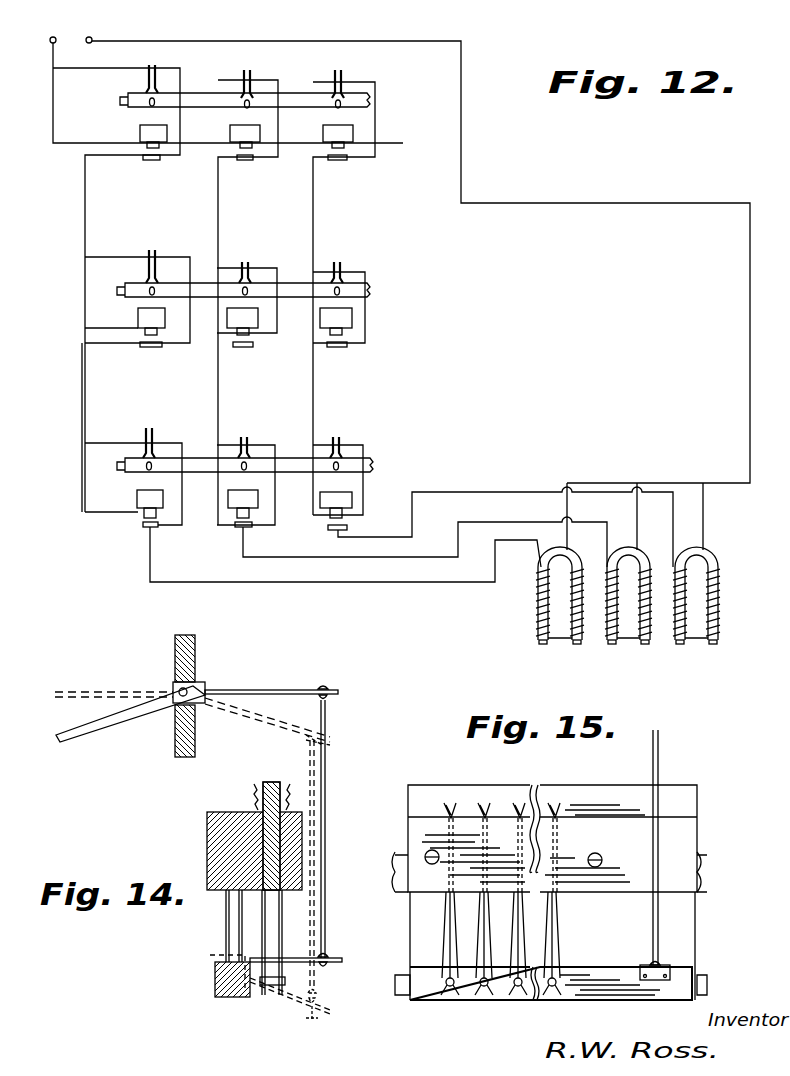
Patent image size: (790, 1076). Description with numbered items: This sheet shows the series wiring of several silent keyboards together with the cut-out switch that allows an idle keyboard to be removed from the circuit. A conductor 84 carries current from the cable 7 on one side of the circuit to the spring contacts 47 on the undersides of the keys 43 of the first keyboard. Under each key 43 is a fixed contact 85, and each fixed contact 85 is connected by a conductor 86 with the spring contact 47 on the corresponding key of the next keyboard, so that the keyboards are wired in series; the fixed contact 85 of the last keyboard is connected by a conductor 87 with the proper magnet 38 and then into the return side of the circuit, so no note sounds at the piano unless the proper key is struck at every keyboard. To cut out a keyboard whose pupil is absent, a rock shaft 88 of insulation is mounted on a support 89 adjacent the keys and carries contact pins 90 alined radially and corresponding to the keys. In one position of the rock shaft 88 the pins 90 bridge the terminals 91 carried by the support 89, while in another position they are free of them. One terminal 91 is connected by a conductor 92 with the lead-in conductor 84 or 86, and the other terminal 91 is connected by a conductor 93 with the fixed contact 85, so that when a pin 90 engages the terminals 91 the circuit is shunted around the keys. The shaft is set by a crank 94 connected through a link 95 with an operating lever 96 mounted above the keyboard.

In FIG. 12, the cable 7 is at (71, 30).
In FIG. 12, the conductor 84 is at (53, 118).
In FIG. 12, the conductor 93 is at (180, 68).
In FIG. 12, the conductor 92 is at (110, 68).
In FIG. 12, the conductor 86 is at (85, 240).
In FIG. 12, the rock shaft 88 is at (355, 104).
In FIG. 14, the rock shaft 88 is at (217, 997).
In FIG. 15, the rock shaft 88 is at (426, 995).
In FIG. 12, the terminals 91 is at (252, 62).
In FIG. 14, the terminals 91 is at (265, 925).
In FIG. 15, the terminals 91 is at (445, 952).
In FIG. 12, the contact pins 90 is at (156, 105).
In FIG. 14, the contact pins 90 is at (270, 985).
In FIG. 15, the contact pins 90 is at (484, 997).
In FIG. 12, the keys 43 is at (140, 133).
In FIG. 12, the spring contact 47 is at (150, 150).
In FIG. 12, the fixed contact 85 is at (158, 160).
In FIG. 12, the conductor 87 is at (320, 583).
In FIG. 12, the magnet 38 is at (538, 553).
In FIG. 14, the operating lever 96 is at (135, 705).
In FIG. 14, the link 95 is at (325, 833).
In FIG. 15, the link 95 is at (653, 868).
In FIG. 14, the support 89 is at (207, 862).
In FIG. 15, the support 89 is at (585, 795).
In FIG. 14, the crank 94 is at (340, 962).
In FIG. 15, the crank 94 is at (642, 965).